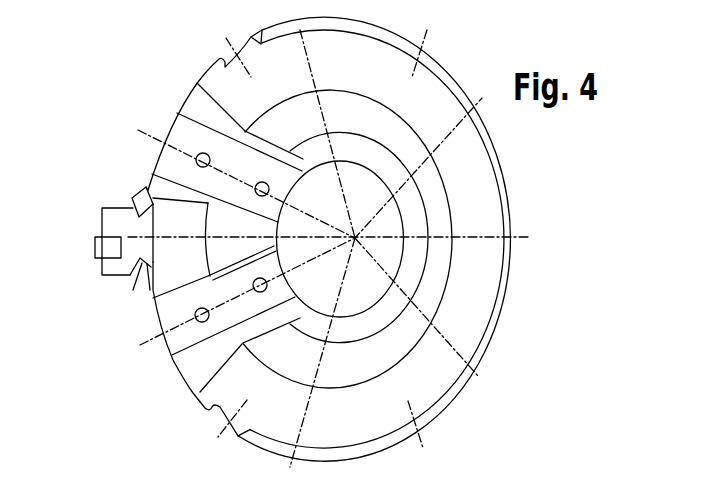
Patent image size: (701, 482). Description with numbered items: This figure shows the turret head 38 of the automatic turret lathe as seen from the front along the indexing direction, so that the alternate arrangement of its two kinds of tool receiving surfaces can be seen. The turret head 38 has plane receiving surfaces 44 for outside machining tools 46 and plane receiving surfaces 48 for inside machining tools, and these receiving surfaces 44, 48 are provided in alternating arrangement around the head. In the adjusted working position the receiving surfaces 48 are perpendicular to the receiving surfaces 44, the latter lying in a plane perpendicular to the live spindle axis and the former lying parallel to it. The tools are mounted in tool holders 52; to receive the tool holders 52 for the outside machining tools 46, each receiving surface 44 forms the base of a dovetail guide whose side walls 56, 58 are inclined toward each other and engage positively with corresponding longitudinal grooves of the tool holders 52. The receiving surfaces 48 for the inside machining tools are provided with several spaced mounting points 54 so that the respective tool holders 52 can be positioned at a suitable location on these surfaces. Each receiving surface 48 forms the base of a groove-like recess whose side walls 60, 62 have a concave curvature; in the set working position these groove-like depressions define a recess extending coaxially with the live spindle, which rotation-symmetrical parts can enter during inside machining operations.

The turret head 38 is at (460, 57).
The receiving surfaces for outside machining tools 44 is at (234, 62).
The outside machining tools 46 is at (96, 253).
The receiving surfaces for inside machining tools 48 is at (180, 126).
The tool holders 52 is at (100, 210).
The mounting points 54 is at (258, 184).
The side wall of dovetail guide 56 is at (219, 58).
The side wall of dovetail guide 58 is at (253, 42).
The side wall of groove-like recess 60 is at (159, 166).
The side wall of groove-like recess 62 is at (198, 96).